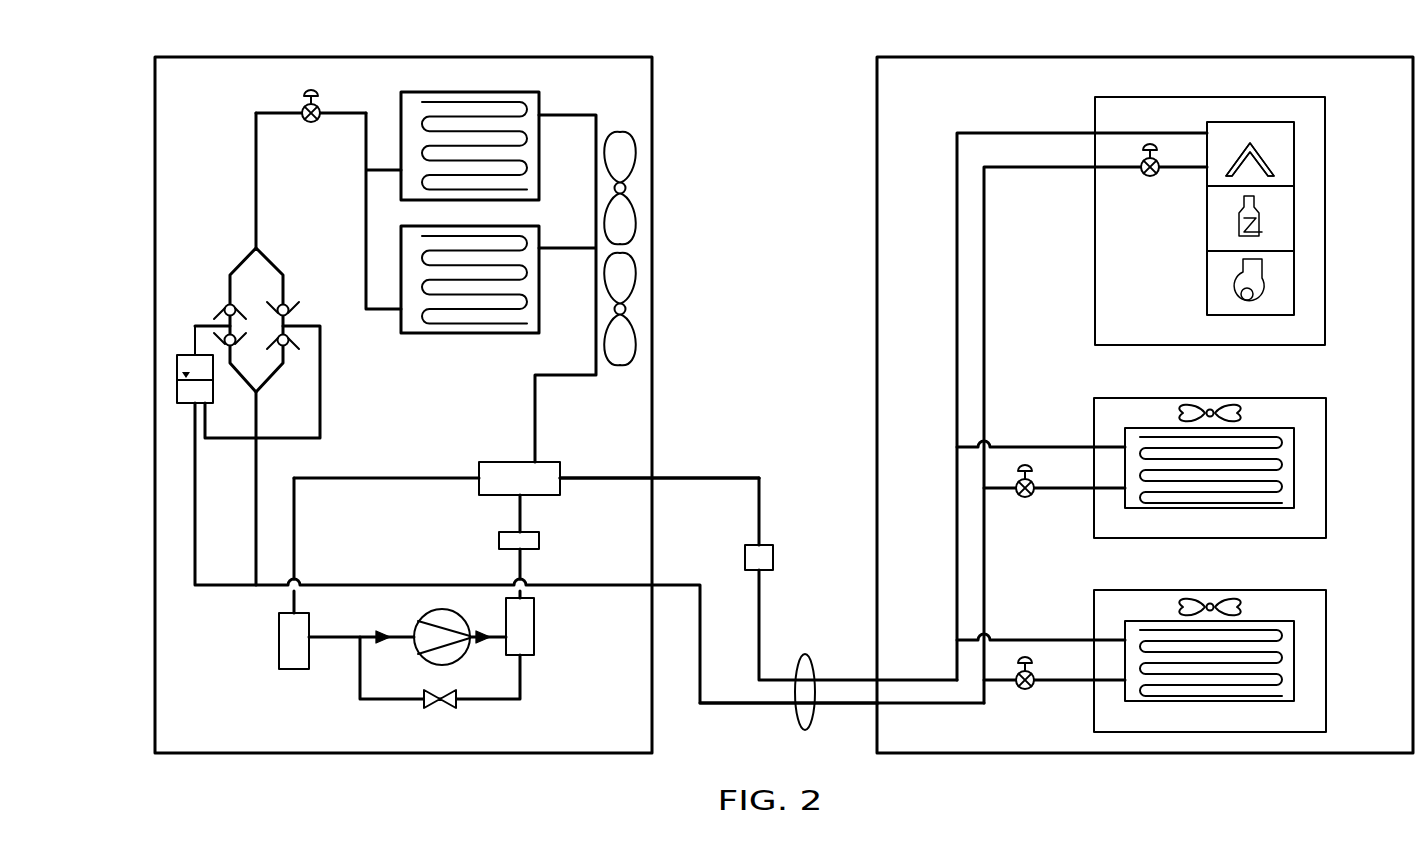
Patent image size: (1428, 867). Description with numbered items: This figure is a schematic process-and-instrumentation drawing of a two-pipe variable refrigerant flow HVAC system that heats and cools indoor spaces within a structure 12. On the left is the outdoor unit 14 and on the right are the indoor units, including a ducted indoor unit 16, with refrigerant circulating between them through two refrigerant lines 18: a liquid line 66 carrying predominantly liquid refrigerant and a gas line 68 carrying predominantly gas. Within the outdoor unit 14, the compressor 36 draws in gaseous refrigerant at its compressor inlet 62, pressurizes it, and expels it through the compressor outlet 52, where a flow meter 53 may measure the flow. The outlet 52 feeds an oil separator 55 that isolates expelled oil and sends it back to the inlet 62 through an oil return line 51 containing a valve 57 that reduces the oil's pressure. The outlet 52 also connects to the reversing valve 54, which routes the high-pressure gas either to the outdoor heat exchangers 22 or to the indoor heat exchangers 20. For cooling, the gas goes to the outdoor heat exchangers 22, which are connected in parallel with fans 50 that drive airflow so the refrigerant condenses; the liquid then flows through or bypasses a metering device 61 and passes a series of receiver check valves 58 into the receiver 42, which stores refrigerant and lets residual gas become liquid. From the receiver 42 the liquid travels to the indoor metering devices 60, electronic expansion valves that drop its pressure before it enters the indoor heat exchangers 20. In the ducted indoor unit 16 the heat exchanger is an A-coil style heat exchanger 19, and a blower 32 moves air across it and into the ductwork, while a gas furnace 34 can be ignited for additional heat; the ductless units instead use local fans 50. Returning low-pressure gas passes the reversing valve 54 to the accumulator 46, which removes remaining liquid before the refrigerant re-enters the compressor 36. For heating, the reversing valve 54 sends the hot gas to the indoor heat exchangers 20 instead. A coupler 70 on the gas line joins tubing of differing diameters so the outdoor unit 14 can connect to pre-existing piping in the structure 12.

The structure 12 is at (1145, 57).
The outdoor unit 14 is at (408, 57).
The ducted indoor unit 16 is at (1325, 318).
The refrigerant lines 18 is at (810, 662).
The A-coil style heat exchanger 19 is at (1262, 143).
The indoor heat exchanger 20 is at (1294, 148).
The outdoor heat exchanger 22 is at (540, 131).
The blower 32 is at (1262, 277).
The gas furnace 34 is at (1294, 217).
The compressor 36 is at (432, 662).
The receiver 42 is at (185, 405).
The accumulator 46 is at (279, 638).
The fan 50 is at (634, 172).
The oil return line 51 is at (487, 703).
The compressor outlet 52 is at (480, 633).
The flow meter 53 is at (540, 540).
The reversing valve 54 is at (500, 460).
The oil separator 55 is at (534, 627).
The valve 57 is at (446, 709).
The receiver check valves 58 is at (283, 290).
The metering device 60 is at (1150, 178).
The metering device 61 is at (311, 124).
The compressor inlet 62 is at (403, 636).
The liquid line 66 is at (755, 707).
The gas line 68 is at (708, 476).
The coupler 70 is at (773, 557).